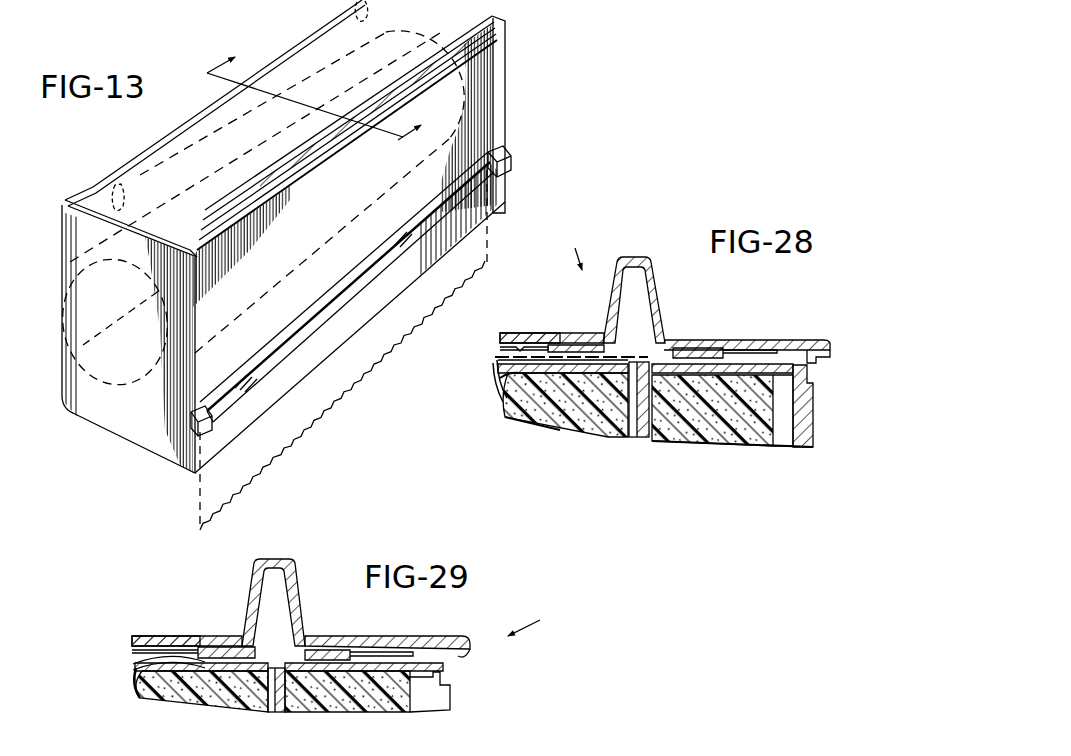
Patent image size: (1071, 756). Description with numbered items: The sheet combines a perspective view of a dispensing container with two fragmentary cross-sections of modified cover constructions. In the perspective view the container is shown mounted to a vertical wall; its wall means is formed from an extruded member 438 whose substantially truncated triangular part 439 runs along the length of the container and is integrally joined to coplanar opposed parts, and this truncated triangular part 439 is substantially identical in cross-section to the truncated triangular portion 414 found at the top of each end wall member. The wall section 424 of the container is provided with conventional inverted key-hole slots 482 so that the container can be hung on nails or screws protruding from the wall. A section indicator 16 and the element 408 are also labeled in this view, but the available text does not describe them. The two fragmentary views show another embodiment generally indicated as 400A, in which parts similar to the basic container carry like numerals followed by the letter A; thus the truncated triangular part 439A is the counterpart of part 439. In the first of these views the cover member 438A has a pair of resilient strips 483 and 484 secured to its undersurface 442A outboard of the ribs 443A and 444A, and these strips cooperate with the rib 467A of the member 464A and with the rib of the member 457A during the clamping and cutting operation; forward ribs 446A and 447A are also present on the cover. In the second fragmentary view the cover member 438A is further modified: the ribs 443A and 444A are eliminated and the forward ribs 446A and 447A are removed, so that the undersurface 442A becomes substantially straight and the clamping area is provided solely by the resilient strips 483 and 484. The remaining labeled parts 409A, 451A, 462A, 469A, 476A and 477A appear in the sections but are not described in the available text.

In FIG. 13, the section line 16- 16 is at (326, 91).
In FIG. 13, the roll core axis 408 is at (87, 341).
In FIG. 28, the adhesive layer 409A is at (500, 357).
In FIG. 29, the adhesive layer 409A is at (132, 660).
In FIG. 13, the truncated triangular portion 414 is at (195, 431).
In FIG. 13, the wall section 424 is at (118, 172).
In FIG. 28, the extruded member 438 is at (585, 345).
In FIG. 28, the cover member 438A is at (520, 333).
In FIG. 29, the cover member 438A is at (172, 636).
In FIG. 13, the truncated triangular part 439 is at (345, 297).
In FIG. 28, the truncated triangular part 439A is at (640, 256).
In FIG. 29, the truncated triangular part 439A is at (283, 560).
In FIG. 28, the undersurface 442A is at (540, 336).
In FIG. 29, the undersurface 442A is at (402, 648).
In FIG. 28, the rib 443A is at (615, 352).
In FIG. 28, the rib 444A is at (676, 348).
In FIG. 28, the forward rib 446A is at (780, 440).
In FIG. 28, the forward rib 447A is at (790, 372).
In FIG. 28, the front lip 451A is at (500, 383).
In FIG. 28, the member 457A is at (813, 450).
In FIG. 29, the member 457A is at (452, 697).
In FIG. 28, the thin layer 462A is at (703, 346).
In FIG. 28, the member 464A is at (506, 402).
In FIG. 29, the member 464A is at (140, 690).
In FIG. 28, the rib 467A is at (540, 420).
In FIG. 28, the divider web 469A is at (642, 438).
In FIG. 28, the front foam body 476A is at (583, 425).
In FIG. 29, the front foam body 476A is at (205, 714).
In FIG. 28, the rear foam body 477A is at (708, 447).
In FIG. 29, the rear foam body 477A is at (355, 712).
In FIG. 13, the inverted key-hole slots 482 is at (112, 188).
In FIG. 29, the resilient strip 483 is at (230, 637).
In FIG. 28, the resilient strip 484 is at (716, 351).
In FIG. 29, the resilient strip 484 is at (334, 650).
In FIG. 28, the dispensing container embodiment 400A is at (574, 246).
In FIG. 29, the dispensing container embodiment 400A is at (554, 621).